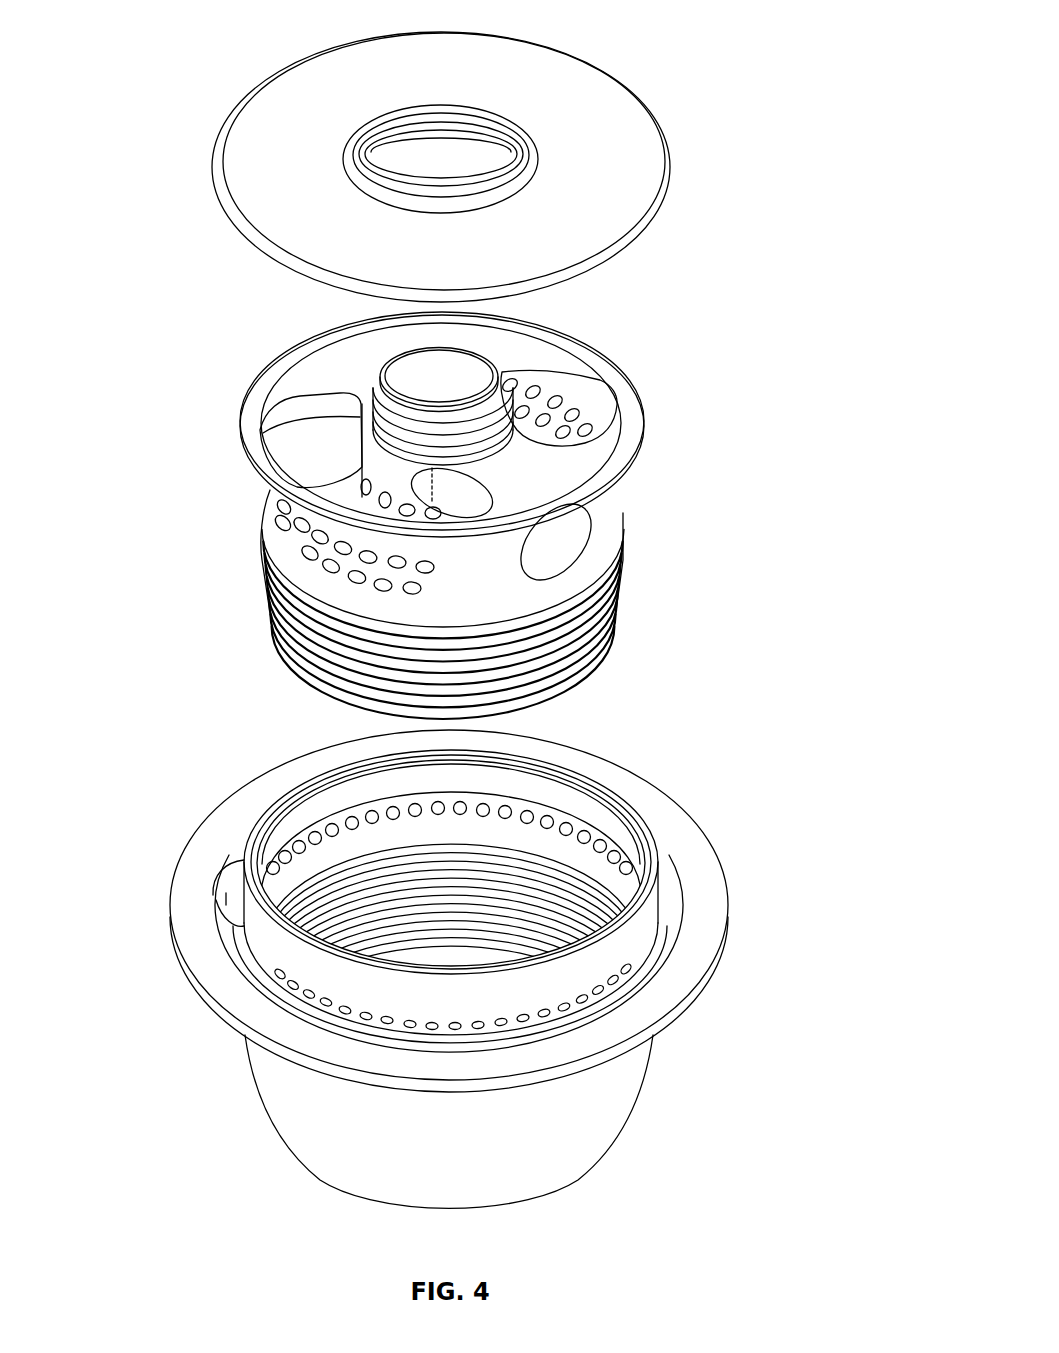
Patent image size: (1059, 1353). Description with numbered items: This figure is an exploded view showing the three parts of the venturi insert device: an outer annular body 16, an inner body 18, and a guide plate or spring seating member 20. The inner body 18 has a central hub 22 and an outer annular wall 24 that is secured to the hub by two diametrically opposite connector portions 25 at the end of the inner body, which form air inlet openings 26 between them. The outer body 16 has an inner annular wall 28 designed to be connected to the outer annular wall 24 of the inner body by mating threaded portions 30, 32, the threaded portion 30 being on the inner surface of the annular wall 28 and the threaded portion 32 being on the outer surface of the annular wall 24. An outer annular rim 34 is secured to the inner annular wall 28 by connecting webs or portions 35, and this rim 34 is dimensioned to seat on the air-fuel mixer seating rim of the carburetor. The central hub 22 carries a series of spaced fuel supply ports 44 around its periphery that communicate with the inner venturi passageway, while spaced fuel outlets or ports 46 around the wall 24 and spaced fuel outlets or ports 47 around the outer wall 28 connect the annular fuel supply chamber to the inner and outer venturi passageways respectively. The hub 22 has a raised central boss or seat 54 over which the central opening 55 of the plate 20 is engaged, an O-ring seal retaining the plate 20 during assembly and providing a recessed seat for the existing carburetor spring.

The outer annular body 16 is at (467, 957).
The inner body 18 is at (452, 476).
The guide plate or spring seating member 20 is at (474, 153).
The central hub 22 is at (340, 460).
The outer annular wall 24 is at (545, 592).
The connector portions 25 is at (300, 372).
The air inlet openings 26 is at (560, 360).
The inner annular wall 28 is at (642, 909).
The threaded portion 30 is at (537, 910).
The threaded portion 32 is at (282, 652).
The outer annular rim 34 is at (708, 925).
The connecting webs or portions 35 is at (226, 896).
The fuel supply ports 44 is at (410, 507).
The fuel outlets or ports 46 is at (340, 548).
The fuel outlets or ports 47 is at (433, 808).
The raised central boss or seat 54 is at (465, 370).
The central opening 55 is at (492, 168).